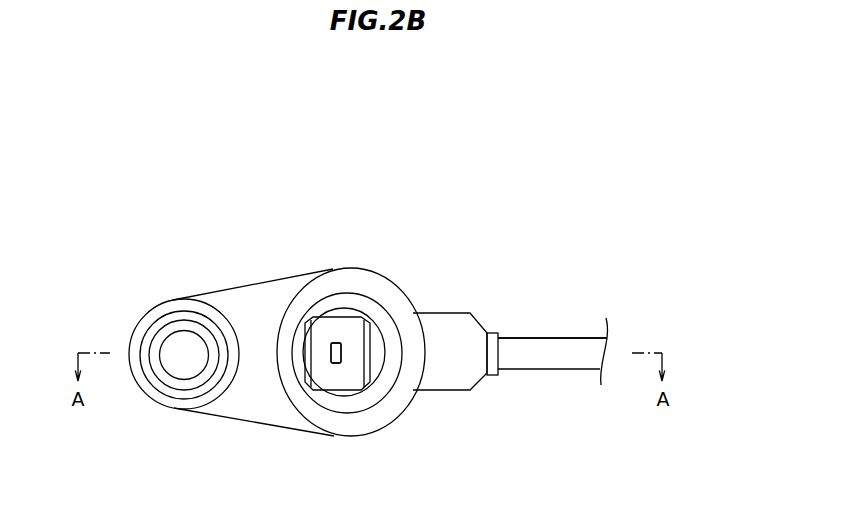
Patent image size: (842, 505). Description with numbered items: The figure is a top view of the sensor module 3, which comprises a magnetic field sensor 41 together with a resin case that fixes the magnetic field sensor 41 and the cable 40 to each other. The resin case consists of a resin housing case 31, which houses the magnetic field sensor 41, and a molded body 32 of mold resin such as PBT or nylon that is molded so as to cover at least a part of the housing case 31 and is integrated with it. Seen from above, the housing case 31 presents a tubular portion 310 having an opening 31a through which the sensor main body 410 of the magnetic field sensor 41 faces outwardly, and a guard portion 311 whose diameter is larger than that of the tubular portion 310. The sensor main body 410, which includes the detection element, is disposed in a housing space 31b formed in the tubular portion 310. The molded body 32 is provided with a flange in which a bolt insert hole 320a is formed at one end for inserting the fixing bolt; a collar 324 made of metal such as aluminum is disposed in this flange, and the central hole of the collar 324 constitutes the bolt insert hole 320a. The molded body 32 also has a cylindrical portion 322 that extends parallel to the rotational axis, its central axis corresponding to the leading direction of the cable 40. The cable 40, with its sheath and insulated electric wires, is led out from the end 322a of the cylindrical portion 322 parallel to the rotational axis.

The sensor module 3 is at (186, 214).
The housing case 31 is at (369, 442).
The tubular portion 310 is at (315, 317).
The guard portion 311 is at (322, 302).
The opening 31a is at (386, 324).
The housing space 31b is at (348, 328).
The molded body 32 is at (466, 432).
The cylindrical portion 322 is at (442, 342).
The end of the cylindrical portion 322a is at (519, 333).
The collar 324 is at (175, 325).
The bolt insert hole 320a is at (171, 342).
The cable 40 is at (554, 357).
The magnetic field sensor 41 is at (334, 380).
The sensor main body 410 is at (331, 358).